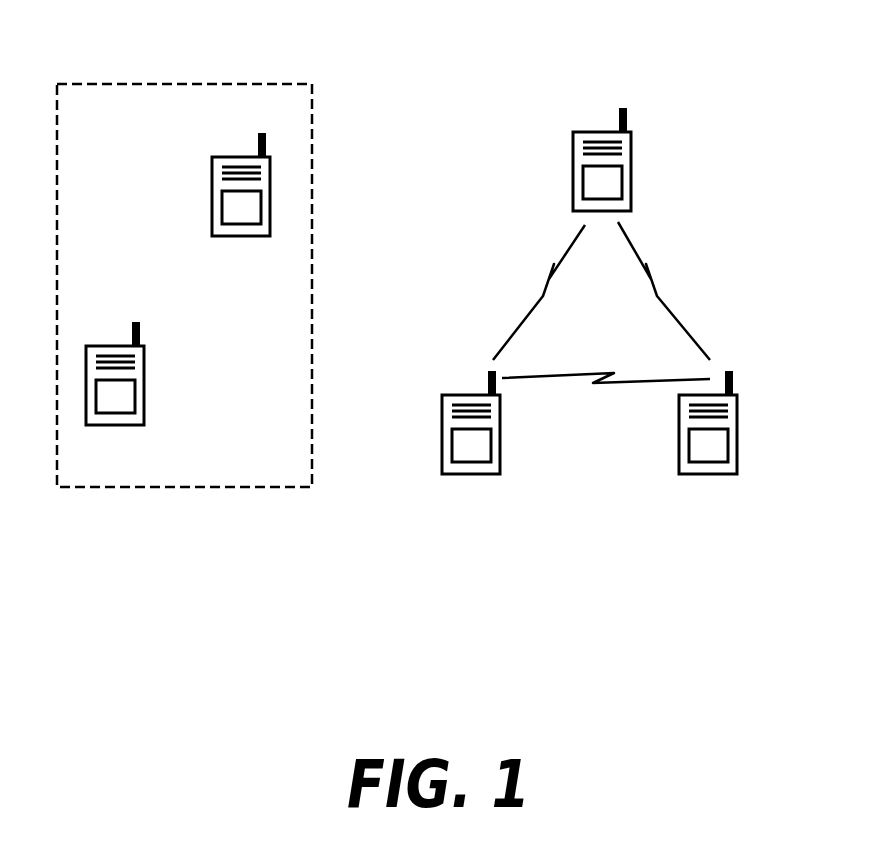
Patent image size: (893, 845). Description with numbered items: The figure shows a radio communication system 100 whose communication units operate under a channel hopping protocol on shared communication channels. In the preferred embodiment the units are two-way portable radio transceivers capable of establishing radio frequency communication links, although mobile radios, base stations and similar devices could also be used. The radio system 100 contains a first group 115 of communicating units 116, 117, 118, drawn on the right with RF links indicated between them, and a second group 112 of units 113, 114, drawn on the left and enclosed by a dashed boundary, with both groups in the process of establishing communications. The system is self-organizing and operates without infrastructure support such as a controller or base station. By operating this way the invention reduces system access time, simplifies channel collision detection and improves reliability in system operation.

The radio communication system 100 is at (113, 625).
The second group 112 is at (160, 80).
The communicating unit 113 is at (145, 368).
The communicating unit 114 is at (210, 178).
The first group 115 is at (753, 258).
The communicating unit 116 is at (632, 153).
The communicating unit 117 is at (440, 423).
The communicating unit 118 is at (738, 423).